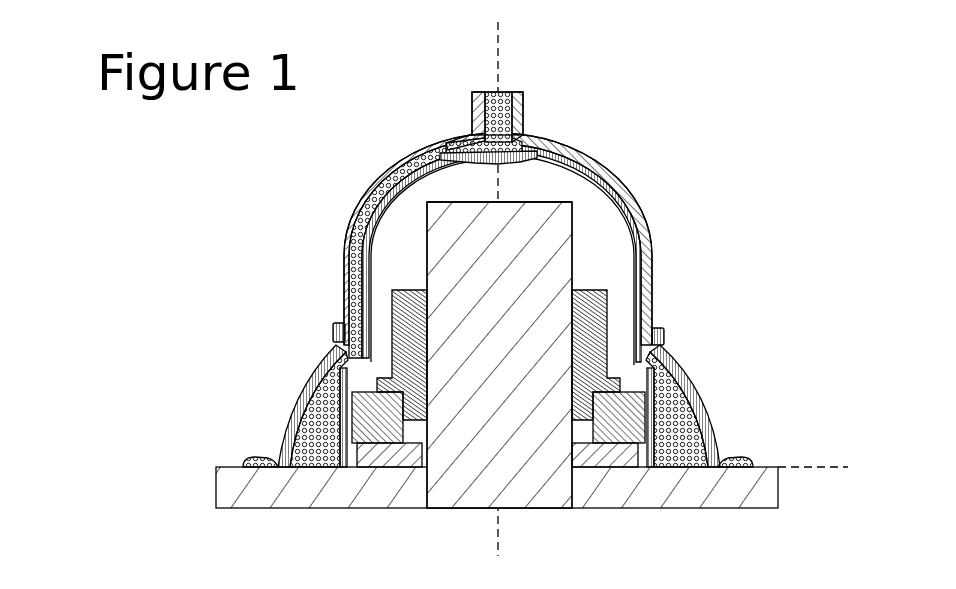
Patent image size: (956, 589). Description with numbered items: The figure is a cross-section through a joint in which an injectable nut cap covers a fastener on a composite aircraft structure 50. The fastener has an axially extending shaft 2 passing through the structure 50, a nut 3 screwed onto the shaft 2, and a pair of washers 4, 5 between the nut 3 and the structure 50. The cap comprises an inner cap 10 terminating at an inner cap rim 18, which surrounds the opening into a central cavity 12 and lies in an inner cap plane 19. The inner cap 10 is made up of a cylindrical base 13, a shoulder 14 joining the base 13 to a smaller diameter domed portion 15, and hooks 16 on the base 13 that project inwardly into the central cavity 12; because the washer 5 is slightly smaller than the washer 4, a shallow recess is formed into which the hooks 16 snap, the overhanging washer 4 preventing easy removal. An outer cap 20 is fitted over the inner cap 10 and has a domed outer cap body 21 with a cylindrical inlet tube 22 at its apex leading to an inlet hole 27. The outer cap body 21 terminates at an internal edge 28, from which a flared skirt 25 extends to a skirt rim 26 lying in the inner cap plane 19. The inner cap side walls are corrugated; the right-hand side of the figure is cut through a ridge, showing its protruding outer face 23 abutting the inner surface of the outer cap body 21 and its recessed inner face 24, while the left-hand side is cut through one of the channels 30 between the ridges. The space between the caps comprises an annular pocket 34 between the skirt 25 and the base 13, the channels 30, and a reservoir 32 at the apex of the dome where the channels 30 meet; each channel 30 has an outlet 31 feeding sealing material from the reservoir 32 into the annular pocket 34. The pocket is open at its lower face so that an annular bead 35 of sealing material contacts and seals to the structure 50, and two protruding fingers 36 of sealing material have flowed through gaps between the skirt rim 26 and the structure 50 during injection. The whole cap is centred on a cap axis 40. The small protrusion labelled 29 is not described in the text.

The shaft 2 is at (447, 203).
The nut 3 is at (604, 318).
The washer 4 is at (622, 415).
The washer 5 is at (587, 467).
The inner cap 10 is at (603, 207).
The central cavity 12 is at (546, 201).
The cylindrical base 13 is at (338, 422).
The shoulder 14 is at (343, 366).
The domed portion 15 is at (382, 234).
The hooks 16 is at (646, 456).
The inner cap rim 18 is at (343, 467).
The inner cap plane 19 is at (812, 470).
The outer cap 20 is at (644, 210).
The outer cap body 21 is at (393, 168).
The inlet tube 22 is at (523, 98).
The protruding outer face 23 is at (577, 157).
The recessed inner face 24 is at (600, 192).
The flared skirt 25 is at (710, 412).
The skirt rim 26 is at (712, 467).
The inlet hole 27 is at (490, 132).
The internal edge 28 is at (335, 336).
The right protrusion 29 is at (658, 335).
The channels 30 is at (392, 192).
The outlet 31 is at (356, 330).
The reservoir 32 is at (510, 142).
The annular pocket 34 is at (308, 446).
The annular bead 35 is at (326, 452).
The fingers 36 is at (250, 458).
The cap axis 40 is at (503, 42).
The structure 50 is at (216, 482).